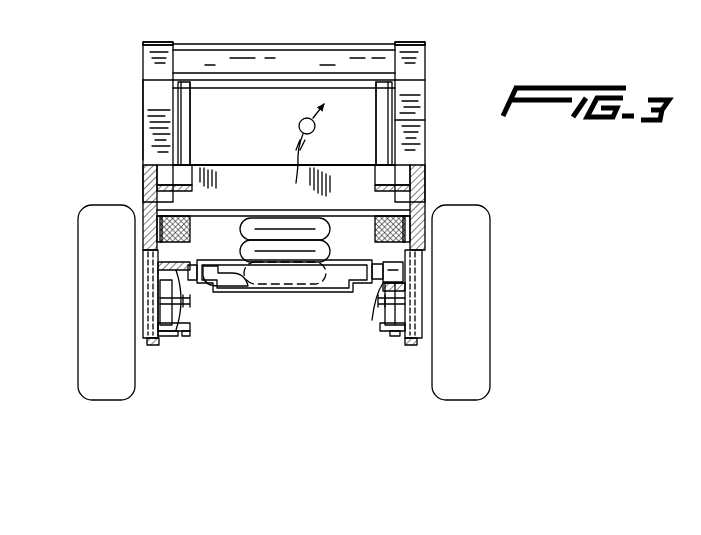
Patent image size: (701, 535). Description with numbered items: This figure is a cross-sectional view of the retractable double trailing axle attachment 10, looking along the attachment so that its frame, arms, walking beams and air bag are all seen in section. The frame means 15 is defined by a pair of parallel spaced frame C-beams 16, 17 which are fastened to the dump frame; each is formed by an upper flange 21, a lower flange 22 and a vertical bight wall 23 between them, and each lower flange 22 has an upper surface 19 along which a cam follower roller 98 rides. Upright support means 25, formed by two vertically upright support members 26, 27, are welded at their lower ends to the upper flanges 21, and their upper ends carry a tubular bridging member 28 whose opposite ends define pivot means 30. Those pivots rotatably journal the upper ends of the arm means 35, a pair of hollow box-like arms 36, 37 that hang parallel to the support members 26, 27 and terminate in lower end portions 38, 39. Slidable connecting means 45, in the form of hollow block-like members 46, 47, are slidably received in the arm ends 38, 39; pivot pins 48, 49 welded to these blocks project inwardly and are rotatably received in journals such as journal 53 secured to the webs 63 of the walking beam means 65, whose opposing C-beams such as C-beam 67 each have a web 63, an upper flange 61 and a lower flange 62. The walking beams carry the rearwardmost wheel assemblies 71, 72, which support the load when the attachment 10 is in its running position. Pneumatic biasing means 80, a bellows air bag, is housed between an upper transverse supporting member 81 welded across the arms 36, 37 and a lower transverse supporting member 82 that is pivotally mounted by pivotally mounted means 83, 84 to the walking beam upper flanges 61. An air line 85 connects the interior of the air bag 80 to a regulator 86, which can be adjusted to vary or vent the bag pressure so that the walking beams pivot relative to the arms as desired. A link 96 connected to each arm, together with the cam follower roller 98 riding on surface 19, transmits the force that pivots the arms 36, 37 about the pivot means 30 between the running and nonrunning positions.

The retractable double trailing axle attachment 10 is at (513, 178).
The frame means 15 is at (155, 165).
The frame C-beam 16 is at (158, 183).
The frame C-beam 17 is at (415, 182).
The upper surface 19 is at (182, 213).
The upper flange 21 is at (195, 180).
The lower flange 22 is at (185, 262).
The bight wall 23 is at (155, 222).
The upright support means 25 is at (195, 120).
The vertically upright support member 26 is at (185, 100).
The vertically upright support member 27 is at (375, 105).
The tubular bridging member 28 is at (290, 50).
The pivot means 30 is at (145, 62).
The arm means 35 is at (140, 80).
The arm 36 is at (143, 97).
The arm 37 is at (415, 103).
The lower end portion 38 is at (148, 330).
The lower end portion 39 is at (418, 321).
The slidable connecting means 45 is at (150, 346).
The block-like sliding member 46 is at (150, 288).
The block-like sliding member 47 is at (420, 278).
The pivot pin 48 is at (190, 304).
The pivot pin 49 is at (365, 303).
The journal 53 is at (392, 328).
The upper flange 61 is at (180, 268).
The lower flange 62 is at (175, 336).
The web 63 is at (188, 323).
The walking beam means 65 is at (195, 333).
The walking beam C-beam 67 is at (385, 283).
The rearwardmost steerable wheel assembly 71 is at (92, 345).
The rearwardmost steerable wheel assembly 72 is at (475, 387).
The pneumatic biasing means 80 is at (325, 240).
The upper transverse supporting member 81 is at (268, 198).
The lower transverse supporting member 82 is at (287, 293).
The pivotally mounted means 83 is at (240, 288).
The pivotally mounted means 84 is at (375, 262).
The air line 85 is at (303, 170).
The regulator 86 is at (318, 132).
The link 96 is at (158, 232).
The cam follower roller 98 is at (165, 228).